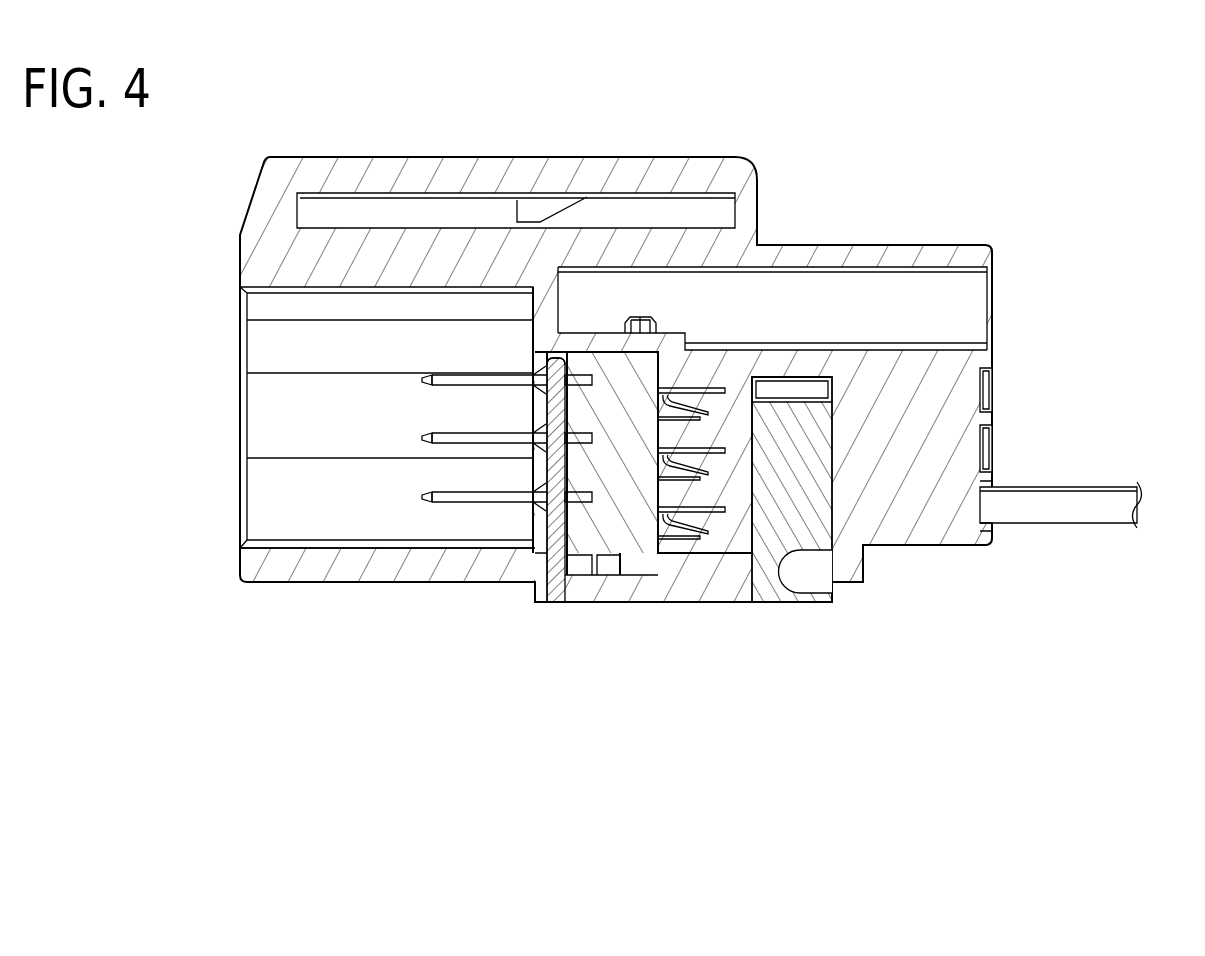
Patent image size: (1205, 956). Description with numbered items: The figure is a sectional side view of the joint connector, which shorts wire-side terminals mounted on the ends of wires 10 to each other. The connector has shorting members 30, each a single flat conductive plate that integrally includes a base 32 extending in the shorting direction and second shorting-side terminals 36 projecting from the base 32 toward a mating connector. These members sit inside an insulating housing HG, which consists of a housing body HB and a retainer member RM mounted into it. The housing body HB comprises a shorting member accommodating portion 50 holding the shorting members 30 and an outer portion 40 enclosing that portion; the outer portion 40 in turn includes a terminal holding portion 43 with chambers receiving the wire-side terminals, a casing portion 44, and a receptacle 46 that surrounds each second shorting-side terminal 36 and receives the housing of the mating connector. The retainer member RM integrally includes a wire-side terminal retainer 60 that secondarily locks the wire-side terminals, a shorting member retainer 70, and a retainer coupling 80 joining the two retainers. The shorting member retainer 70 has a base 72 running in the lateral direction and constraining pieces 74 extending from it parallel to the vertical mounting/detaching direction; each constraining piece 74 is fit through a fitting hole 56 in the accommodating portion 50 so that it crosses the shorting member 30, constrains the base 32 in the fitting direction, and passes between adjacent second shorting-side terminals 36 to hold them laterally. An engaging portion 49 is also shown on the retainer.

The wire 10 is at (1095, 485).
The shorting member 30 is at (448, 364).
The base 32 is at (582, 377).
The second shorting-side terminal 36 is at (422, 497).
The outer portion 40 is at (478, 603).
The terminal holding portion 43 is at (985, 565).
The casing portion 44 is at (638, 350).
The receptacle 46 is at (282, 572).
The engaging portion 49 is at (823, 553).
The shorting member accommodating portion 50 is at (537, 570).
The fitting hole 56 is at (557, 353).
The wire-side terminal retainer 60 is at (827, 507).
The shorting member retainer 70 is at (522, 530).
The base 72 is at (558, 567).
The constraining piece 74 is at (543, 403).
The retainer coupling 80 is at (698, 592).
The housing body HB is at (528, 645).
The insulating housing HG is at (850, 158).
The retainer member RM is at (780, 622).